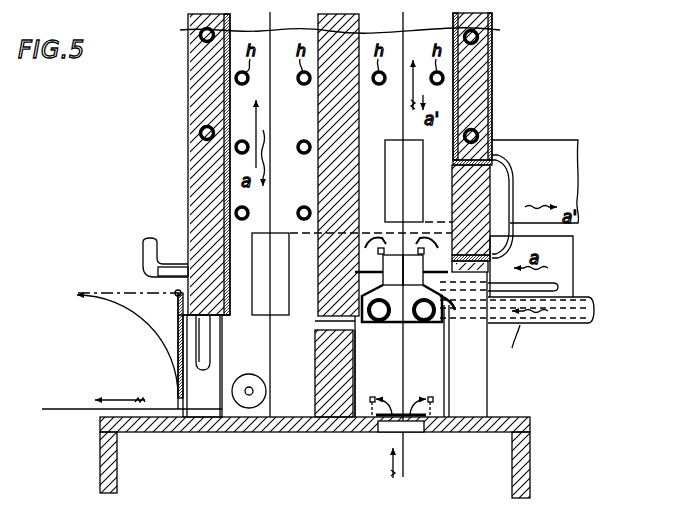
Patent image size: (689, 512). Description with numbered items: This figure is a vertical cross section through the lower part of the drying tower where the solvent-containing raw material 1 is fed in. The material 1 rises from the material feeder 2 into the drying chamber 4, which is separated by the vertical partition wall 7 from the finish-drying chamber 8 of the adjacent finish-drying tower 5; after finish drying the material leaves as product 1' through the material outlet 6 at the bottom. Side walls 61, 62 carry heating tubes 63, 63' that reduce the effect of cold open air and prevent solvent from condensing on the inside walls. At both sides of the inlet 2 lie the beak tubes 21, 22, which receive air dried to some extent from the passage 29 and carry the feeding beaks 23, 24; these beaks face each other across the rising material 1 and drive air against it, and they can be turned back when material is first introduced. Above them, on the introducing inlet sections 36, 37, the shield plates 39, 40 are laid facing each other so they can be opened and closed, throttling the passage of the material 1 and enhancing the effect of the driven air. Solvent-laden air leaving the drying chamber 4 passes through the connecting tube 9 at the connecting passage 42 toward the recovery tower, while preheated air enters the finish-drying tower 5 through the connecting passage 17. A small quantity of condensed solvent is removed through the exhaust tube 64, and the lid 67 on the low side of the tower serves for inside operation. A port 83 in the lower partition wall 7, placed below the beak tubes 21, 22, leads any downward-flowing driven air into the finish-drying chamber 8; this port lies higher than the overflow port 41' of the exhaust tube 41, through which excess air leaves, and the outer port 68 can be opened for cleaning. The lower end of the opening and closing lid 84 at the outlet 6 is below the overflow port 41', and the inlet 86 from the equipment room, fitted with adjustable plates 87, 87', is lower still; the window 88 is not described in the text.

The solvent-containing raw material 1 is at (404, 476).
The product 1' is at (121, 346).
The material feeder 2 is at (396, 328).
The drying chamber 4 is at (382, 127).
The finish-drying tower 5 is at (190, 29).
The material outlet 6 is at (190, 418).
The vertical partition wall 7 is at (322, 18).
The finish-drying chamber 8 is at (297, 127).
The connecting tube 9 is at (542, 140).
The connecting passage 17 is at (572, 247).
The beak tube 21 is at (375, 324).
The beak tube 22 is at (430, 324).
The feeding beak 23 is at (393, 270).
The feeding beak 24 is at (413, 270).
The passage 29 is at (541, 325).
The introducing inlet section 36 is at (398, 297).
The introducing inlet section 37 is at (444, 300).
The shield plate 39 is at (369, 254).
The shield plate 40 is at (433, 251).
The exhaust tube 41 is at (148, 279).
The overflow port 41' is at (229, 343).
The connecting passage 42 is at (395, 184).
The side wall 61 is at (476, 81).
The side wall 62 is at (202, 75).
The heating tube 63 is at (504, 83).
The heating tube 63' is at (173, 137).
The exhaust tube 64 is at (548, 288).
The lid 67 is at (477, 199).
The outer port 68 is at (150, 240).
The port 83 is at (318, 328).
The opening and closing lid 84 is at (178, 336).
The inlet 86 is at (415, 434).
The adjustable plate 87 is at (375, 397).
The adjustable plate 87' is at (427, 395).
The inspection window 88 is at (256, 273).